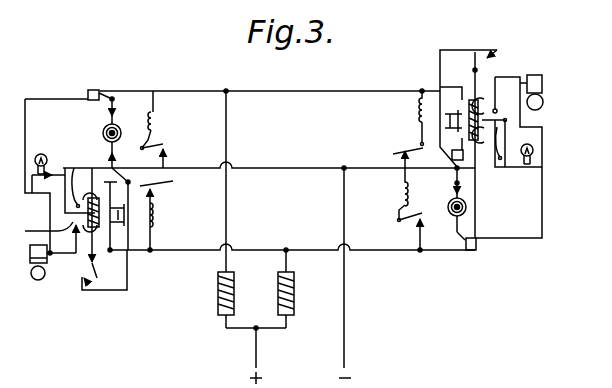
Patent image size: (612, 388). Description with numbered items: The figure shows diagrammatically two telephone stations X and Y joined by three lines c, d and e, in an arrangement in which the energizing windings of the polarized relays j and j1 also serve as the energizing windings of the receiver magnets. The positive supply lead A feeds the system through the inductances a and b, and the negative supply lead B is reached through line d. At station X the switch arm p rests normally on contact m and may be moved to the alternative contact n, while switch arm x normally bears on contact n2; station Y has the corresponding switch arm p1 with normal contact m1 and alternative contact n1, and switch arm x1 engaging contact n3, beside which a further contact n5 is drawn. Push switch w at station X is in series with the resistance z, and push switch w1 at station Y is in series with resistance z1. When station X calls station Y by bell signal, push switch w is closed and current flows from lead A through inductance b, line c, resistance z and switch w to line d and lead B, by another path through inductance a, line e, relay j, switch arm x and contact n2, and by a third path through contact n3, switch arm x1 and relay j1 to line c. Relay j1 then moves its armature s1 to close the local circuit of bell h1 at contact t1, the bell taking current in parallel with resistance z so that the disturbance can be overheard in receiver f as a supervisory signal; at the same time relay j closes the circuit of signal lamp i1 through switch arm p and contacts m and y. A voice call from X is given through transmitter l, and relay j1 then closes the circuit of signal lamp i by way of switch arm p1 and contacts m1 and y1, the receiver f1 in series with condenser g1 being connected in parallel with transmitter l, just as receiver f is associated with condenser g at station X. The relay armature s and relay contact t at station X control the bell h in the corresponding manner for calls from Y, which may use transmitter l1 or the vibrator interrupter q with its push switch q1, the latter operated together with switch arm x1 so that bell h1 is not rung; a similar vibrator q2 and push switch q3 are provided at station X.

The station X is at (57, 144).
The station Y is at (535, 157).
The inductance a is at (215, 300).
The inductance b is at (296, 300).
The line c is at (208, 250).
The line d is at (323, 170).
The line e is at (330, 91).
The receiver f is at (117, 209).
The receiver f1 is at (444, 121).
The condenser g is at (90, 194).
The condenser g1 is at (466, 152).
The bell h is at (37, 281).
The bell h1 is at (543, 84).
The signal lamp i is at (533, 143).
The signal lamp i1 is at (44, 153).
The polarized relay j is at (105, 252).
The polarized relay j1 is at (470, 96).
The transmitter l is at (114, 133).
The transmitter l1 is at (451, 200).
The normal contact m is at (88, 100).
The normal contact m1 is at (478, 247).
The alternative contact n is at (114, 97).
The alternative contact n1 is at (456, 233).
The contact n2 is at (97, 279).
The contact n3 is at (473, 56).
The contact n5 is at (489, 56).
The switch arm p is at (102, 92).
The switch arm p1 is at (466, 250).
The vibrator interrupter q is at (402, 192).
The push switch q1 is at (398, 221).
The vibrator q2 is at (157, 118).
The push switch q3 is at (164, 146).
The relay armature s is at (42, 237).
The relay armature s1 is at (505, 120).
The relay contact t is at (73, 232).
The relay contact t1 is at (496, 76).
The push switch w is at (173, 184).
The push switch w1 is at (393, 153).
The switch arm x is at (84, 280).
The switch arm x1 is at (514, 76).
The contact y is at (74, 170).
The contact y1 is at (500, 160).
The resistance z is at (155, 212).
The resistance z1 is at (418, 113).
The positive supply lead A is at (254, 355).
The negative supply lead B is at (353, 355).